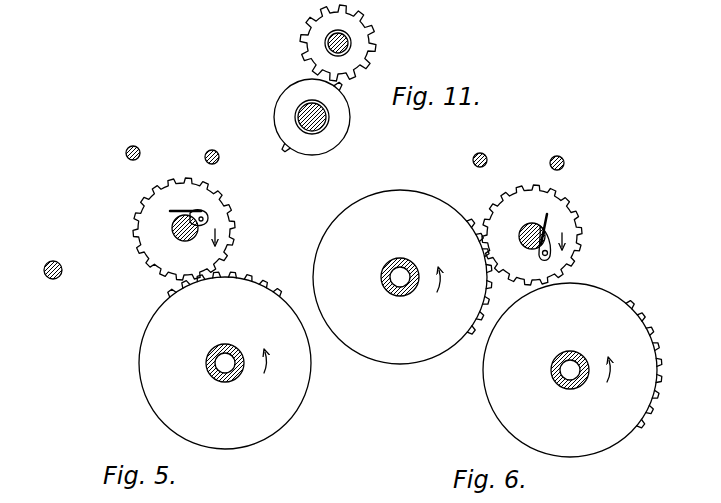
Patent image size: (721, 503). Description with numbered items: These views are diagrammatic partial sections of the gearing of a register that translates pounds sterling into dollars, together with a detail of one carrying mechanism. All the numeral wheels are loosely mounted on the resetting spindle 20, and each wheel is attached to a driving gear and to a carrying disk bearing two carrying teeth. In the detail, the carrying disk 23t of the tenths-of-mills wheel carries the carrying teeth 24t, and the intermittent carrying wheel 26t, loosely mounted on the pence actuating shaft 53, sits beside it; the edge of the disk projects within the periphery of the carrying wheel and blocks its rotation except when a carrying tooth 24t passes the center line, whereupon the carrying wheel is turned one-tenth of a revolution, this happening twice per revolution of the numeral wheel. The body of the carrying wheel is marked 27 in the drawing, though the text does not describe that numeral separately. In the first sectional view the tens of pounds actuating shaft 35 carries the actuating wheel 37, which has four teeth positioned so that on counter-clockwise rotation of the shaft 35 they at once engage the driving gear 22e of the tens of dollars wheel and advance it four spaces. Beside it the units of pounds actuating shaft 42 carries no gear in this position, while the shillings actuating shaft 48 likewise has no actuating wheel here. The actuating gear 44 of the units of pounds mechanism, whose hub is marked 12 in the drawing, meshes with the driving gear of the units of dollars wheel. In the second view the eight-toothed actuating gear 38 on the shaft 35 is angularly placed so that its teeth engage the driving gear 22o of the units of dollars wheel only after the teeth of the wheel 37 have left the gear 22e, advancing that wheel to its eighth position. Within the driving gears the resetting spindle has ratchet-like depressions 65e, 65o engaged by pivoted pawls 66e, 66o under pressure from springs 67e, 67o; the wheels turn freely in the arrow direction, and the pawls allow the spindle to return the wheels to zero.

In FIG. 11, the pinion gear 27 is at (333, 43).
In FIG. 11, the intermittent carrying wheel 26t is at (365, 43).
In FIG. 11, the resetting spindle 20 is at (309, 129).
In FIG. 6, the resetting spindle 20 is at (556, 228).
In FIG. 11, the carrying disk 23t is at (342, 133).
In FIG. 11, the carrying teeth 24t is at (340, 88).
In FIG. 5, the shillings actuating shaft 48 is at (141, 150).
In FIG. 6, the shillings actuating shaft 48 is at (472, 160).
In FIG. 5, the pence actuating shaft 53 is at (219, 157).
In FIG. 6, the pence actuating shaft 53 is at (565, 159).
In FIG. 5, the units of pounds actuating shaft 42 is at (55, 280).
In FIG. 5, the driving gear 22e is at (218, 208).
In FIG. 5, the ratchet-like depression 65e is at (171, 230).
In FIG. 5, the pivoted pawl 66e is at (209, 218).
In FIG. 5, the spring 67e is at (172, 210).
In FIG. 5, the actuating wheel 37 is at (143, 348).
In FIG. 5, the tens of pounds actuating shaft 35 is at (225, 374).
In FIG. 6, the tens of pounds actuating shaft 35 is at (552, 380).
In FIG. 5, the actuating gear 44 is at (327, 243).
In FIG. 5, the shaft 12 is at (393, 291).
In FIG. 6, the driving gear 22o is at (580, 237).
In FIG. 6, the ratchet-like depression 65o is at (542, 226).
In FIG. 6, the pivoted pawl 66o is at (552, 256).
In FIG. 6, the spring 67o is at (550, 222).
In FIG. 6, the actuating gear 38 is at (608, 308).